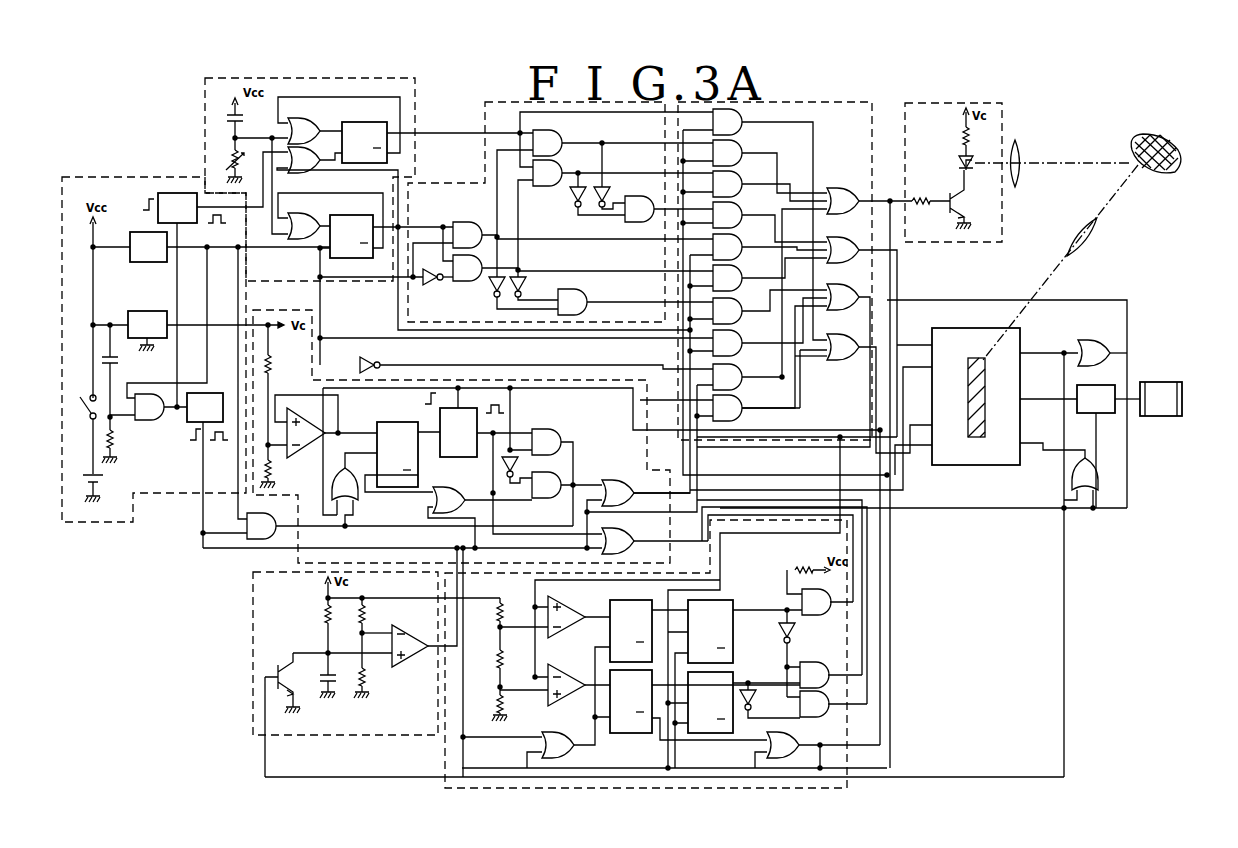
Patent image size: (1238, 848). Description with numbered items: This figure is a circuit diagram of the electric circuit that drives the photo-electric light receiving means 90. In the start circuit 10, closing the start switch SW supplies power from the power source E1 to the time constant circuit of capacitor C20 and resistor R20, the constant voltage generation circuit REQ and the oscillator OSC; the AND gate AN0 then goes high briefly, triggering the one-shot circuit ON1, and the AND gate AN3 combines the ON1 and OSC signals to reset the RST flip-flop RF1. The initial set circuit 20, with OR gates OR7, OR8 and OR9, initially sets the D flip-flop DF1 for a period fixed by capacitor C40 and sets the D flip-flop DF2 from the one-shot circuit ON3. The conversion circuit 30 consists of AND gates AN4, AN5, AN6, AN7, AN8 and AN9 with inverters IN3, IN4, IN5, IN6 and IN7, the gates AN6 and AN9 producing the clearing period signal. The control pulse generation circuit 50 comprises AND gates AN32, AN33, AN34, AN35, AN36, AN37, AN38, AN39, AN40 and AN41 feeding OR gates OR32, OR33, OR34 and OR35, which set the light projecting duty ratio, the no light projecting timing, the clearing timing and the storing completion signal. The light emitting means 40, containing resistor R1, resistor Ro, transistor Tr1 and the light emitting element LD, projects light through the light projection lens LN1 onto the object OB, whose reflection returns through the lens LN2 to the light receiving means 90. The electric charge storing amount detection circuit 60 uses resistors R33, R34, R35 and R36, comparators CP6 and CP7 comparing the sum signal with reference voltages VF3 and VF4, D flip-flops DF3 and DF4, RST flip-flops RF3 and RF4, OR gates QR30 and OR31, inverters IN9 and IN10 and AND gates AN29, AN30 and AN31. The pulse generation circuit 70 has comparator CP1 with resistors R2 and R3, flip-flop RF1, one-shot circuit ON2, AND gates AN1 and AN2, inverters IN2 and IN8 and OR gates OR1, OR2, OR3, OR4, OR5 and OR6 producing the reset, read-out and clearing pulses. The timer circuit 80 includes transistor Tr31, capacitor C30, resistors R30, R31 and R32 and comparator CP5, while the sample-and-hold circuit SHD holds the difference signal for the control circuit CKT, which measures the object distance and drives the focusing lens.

The start circuit 10 is at (92, 526).
The initial set circuit 20 is at (418, 112).
The conversion circuit 30 is at (530, 102).
The light emitting means 40 is at (1004, 135).
The control pulse generation circuit 50 is at (814, 102).
The electric charge storing amount detection circuit 60 is at (849, 744).
The pulse generation circuit 70 is at (648, 468).
The timer circuit 80 is at (242, 620).
The light receiving means 90 is at (957, 326).
The oscillator OSC is at (148, 247).
The constant voltage generation circuit REQ is at (147, 324).
The one-shot circuit ON3 is at (184, 208).
The one-shot circuit ON1 is at (207, 416).
The one-shot circuit ON2 is at (464, 425).
The AND gate AN0 is at (149, 407).
The AND gate AN1 is at (546, 442).
The AND gate AN2 is at (546, 485).
The AND gate AN3 is at (261, 526).
The AND gate AN4 is at (467, 235).
The AND gate AN5 is at (467, 268).
The AND gate AN6 is at (572, 302).
The AND gate AN7 is at (547, 143).
The AND gate AN8 is at (547, 173).
The AND gate AN9 is at (639, 209).
The AND gate AN29 is at (826, 615).
The AND gate AN30 is at (826, 655).
The AND gate AN31 is at (810, 718).
The AND gate AN32 is at (742, 132).
The AND gate AN33 is at (742, 163).
The AND gate AN34 is at (742, 194).
The AND gate AN35 is at (742, 225).
The AND gate AN36 is at (742, 257).
The AND gate AN37 is at (742, 288).
The AND gate AN38 is at (742, 321).
The AND gate AN39 is at (742, 353).
The AND gate AN40 is at (742, 387).
The AND gate AN41 is at (742, 416).
The OR gate OR1 is at (358, 495).
The OR gate OR2 is at (438, 510).
The OR gate OR3 is at (612, 479).
The OR gate OR4 is at (632, 552).
The OR gate OR5 is at (1038, 476).
The OR gate OR6 is at (1093, 342).
The OR gate OR7 is at (309, 217).
The OR gate OR8 is at (306, 123).
The OR gate OR9 is at (315, 165).
The OR gate OR31 is at (766, 753).
The OR gate OR32 is at (847, 188).
The OR gate OR33 is at (851, 234).
The OR gate OR34 is at (855, 310).
The OR gate OR35 is at (853, 360).
The OR gate QR30 is at (575, 752).
The D flip-flop DF1 is at (357, 218).
The D flip-flop DF2 is at (370, 124).
The D flip-flop DF3 is at (650, 604).
The D flip-flop DF4 is at (644, 738).
The RST flip-flop RF1 is at (379, 422).
The RST flip-flop RF3 is at (722, 599).
The RST flip-flop RF4 is at (733, 674).
The inverter IN2 is at (520, 465).
The inverter IN3 is at (428, 288).
The inverter IN4 is at (492, 288).
The inverter IN5 is at (523, 286).
The inverter IN6 is at (573, 202).
The inverter IN7 is at (614, 196).
The inverter IN8 is at (385, 360).
The inverter IN9 is at (778, 632).
The inverter IN10 is at (748, 712).
The comparator CP1 is at (313, 424).
The comparator CP5 is at (412, 659).
The comparator CP6 is at (567, 608).
The comparator CP7 is at (570, 704).
The resistor R1 is at (962, 136).
The resistor Ro is at (922, 207).
The resistor R2 is at (276, 366).
The resistor R3 is at (276, 470).
The resistor R20 is at (118, 440).
The resistor R30 is at (322, 626).
The resistor R31 is at (372, 616).
The resistor R32 is at (368, 682).
The resistor R33 is at (505, 606).
The resistor R34 is at (497, 658).
The resistor R35 is at (506, 708).
The resistor R36 is at (802, 566).
The capacitor C20 is at (118, 366).
The capacitor C30 is at (320, 690).
The capacitor C40 is at (242, 114).
The light emitting element LD is at (958, 163).
The transistor Tr1 is at (968, 206).
The transistor Tr31 is at (280, 666).
The light projection lens LN1 is at (1020, 172).
The lens LN2 is at (1093, 255).
The object OB is at (1156, 175).
The sample-and-hold circuit SHD is at (1096, 399).
The control circuit CKT is at (1161, 399).
The start switch SW is at (79, 420).
The power source E1 is at (100, 492).
The reference voltage VF3 is at (508, 634).
The reference voltage VF4 is at (496, 690).